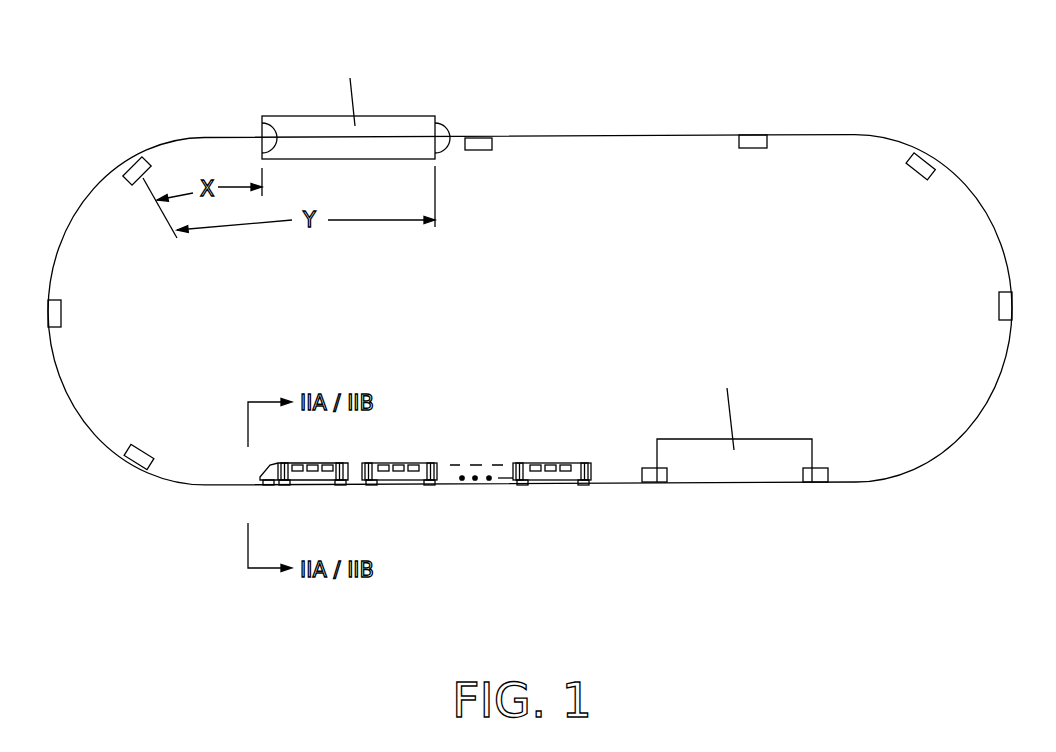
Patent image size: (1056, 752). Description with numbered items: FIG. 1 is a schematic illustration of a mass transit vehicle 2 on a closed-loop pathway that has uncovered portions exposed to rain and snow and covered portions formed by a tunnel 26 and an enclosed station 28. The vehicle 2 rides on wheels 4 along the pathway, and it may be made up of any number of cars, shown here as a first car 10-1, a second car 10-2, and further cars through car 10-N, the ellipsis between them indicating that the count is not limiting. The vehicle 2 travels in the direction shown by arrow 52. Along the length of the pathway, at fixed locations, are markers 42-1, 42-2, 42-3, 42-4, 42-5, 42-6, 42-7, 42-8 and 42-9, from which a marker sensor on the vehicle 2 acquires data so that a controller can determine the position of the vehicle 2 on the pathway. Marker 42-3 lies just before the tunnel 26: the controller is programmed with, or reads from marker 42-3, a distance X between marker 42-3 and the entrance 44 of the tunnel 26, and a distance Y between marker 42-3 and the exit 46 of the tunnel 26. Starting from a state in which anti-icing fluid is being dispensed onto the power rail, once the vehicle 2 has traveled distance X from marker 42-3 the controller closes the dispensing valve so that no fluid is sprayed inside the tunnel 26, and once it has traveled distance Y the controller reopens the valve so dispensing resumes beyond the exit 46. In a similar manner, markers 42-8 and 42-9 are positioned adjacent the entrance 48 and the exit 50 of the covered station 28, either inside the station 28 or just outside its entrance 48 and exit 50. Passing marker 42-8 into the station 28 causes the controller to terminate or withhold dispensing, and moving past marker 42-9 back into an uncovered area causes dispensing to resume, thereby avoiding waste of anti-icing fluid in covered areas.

The vehicle 2 is at (425, 425).
The wheels 4 is at (285, 486).
The car 10-1 is at (300, 463).
The car 10-2 is at (422, 463).
The car 10-N is at (560, 462).
The tunnel 26 is at (413, 123).
The station 28 is at (765, 460).
The marker 42-1 is at (136, 450).
The marker 42-2 is at (61, 310).
The marker 42-3 is at (127, 162).
The marker 42-4 is at (476, 148).
The marker 42-5 is at (752, 143).
The marker 42-6 is at (917, 169).
The marker 42-7 is at (1003, 308).
The marker 42-8 is at (818, 482).
The marker 42-9 is at (650, 482).
The entrance of tunnel 44 is at (255, 132).
The exit of tunnel 46 is at (455, 128).
The entrance of covered station 48 is at (823, 455).
The exit of covered station 50 is at (648, 447).
The arrow 52 is at (248, 474).